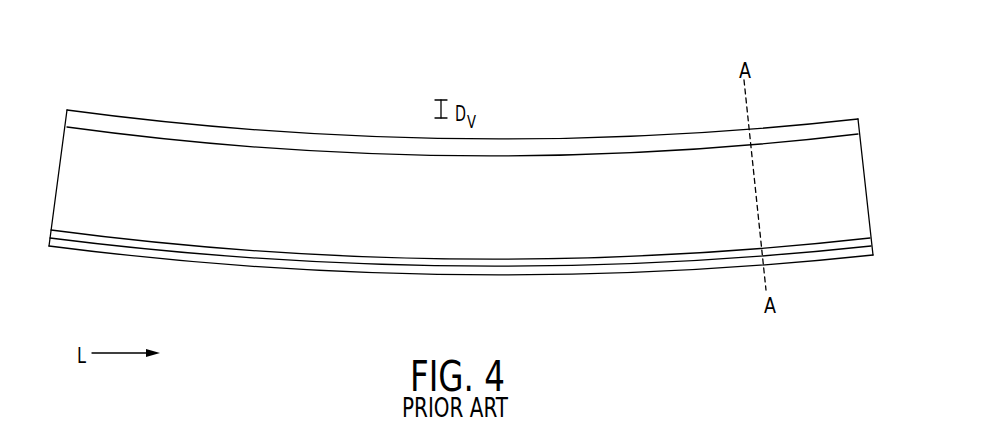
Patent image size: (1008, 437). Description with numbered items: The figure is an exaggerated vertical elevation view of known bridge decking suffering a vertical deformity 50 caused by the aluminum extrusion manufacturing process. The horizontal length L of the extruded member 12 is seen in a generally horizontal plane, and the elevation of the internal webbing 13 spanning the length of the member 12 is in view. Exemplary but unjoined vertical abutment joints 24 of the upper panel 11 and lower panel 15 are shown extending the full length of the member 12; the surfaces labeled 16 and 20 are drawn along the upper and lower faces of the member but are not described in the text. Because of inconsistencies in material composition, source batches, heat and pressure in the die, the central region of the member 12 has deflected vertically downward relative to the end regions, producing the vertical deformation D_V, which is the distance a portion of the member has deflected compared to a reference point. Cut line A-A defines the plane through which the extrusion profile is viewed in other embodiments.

The vertical deformity 50 is at (349, 78).
The outer skin layer 16 is at (133, 123).
The upper panel 11 is at (190, 132).
The vertical abutment joints 24 is at (243, 135).
The member 12 is at (552, 165).
The internal webbing 13 is at (660, 162).
The lower panel 15 is at (265, 272).
The inner skin layer 20 is at (140, 255).